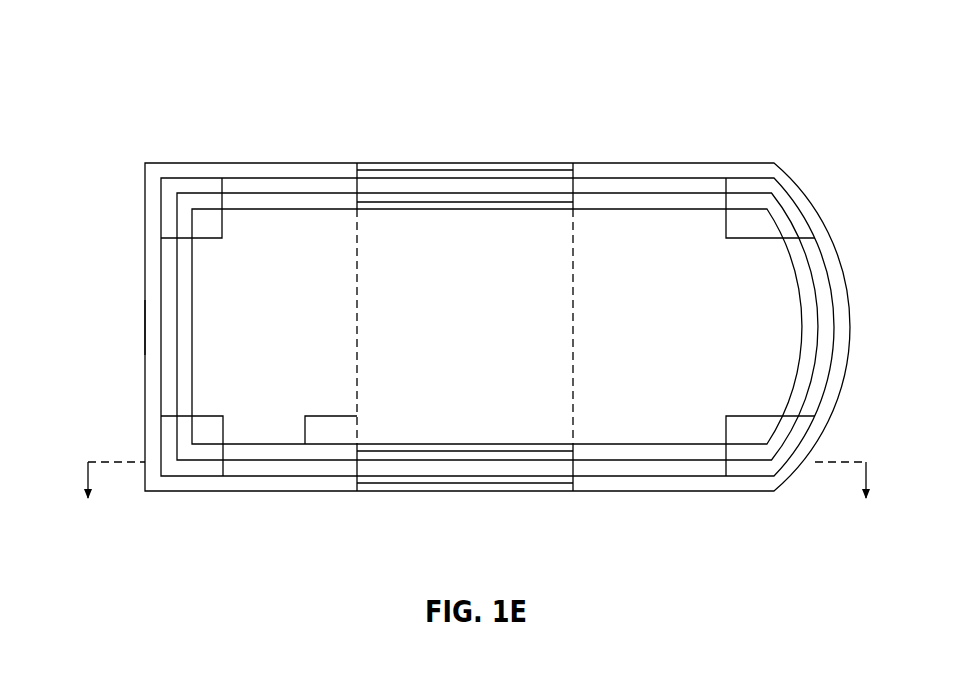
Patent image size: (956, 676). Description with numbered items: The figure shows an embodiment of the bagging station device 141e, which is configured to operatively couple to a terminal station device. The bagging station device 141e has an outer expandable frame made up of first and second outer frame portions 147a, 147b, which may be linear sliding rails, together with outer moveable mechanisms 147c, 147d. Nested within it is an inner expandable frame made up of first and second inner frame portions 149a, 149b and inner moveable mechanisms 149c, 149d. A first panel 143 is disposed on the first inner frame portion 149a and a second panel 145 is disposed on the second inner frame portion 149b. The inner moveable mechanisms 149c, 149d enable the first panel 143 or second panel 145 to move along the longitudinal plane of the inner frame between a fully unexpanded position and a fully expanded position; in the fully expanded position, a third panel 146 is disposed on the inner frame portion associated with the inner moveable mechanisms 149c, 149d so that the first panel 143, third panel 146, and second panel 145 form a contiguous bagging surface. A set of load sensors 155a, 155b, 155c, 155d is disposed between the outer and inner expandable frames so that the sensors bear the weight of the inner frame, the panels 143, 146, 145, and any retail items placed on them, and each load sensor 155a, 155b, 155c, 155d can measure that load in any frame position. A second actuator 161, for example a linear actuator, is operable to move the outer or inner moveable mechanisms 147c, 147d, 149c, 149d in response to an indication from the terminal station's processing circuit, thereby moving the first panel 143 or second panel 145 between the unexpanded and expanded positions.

The bagging station device 141e is at (140, 53).
The first panel 143 is at (287, 346).
The second panel 145 is at (707, 346).
The third panel 146 is at (487, 346).
The first outer frame portion 147a is at (260, 491).
The second outer frame portion 147b is at (743, 492).
The outer moveable mechanism 147c is at (465, 492).
The outer moveable mechanism 147d is at (533, 163).
The first inner frame portion 149a is at (275, 168).
The second inner frame portion 149b is at (653, 190).
The inner moveable mechanism 149c is at (482, 442).
The inner moveable mechanism 149d is at (474, 202).
The load sensor 155a is at (182, 170).
The load sensor 155b is at (165, 436).
The load sensor 155c is at (760, 183).
The load sensor 155d is at (780, 462).
The second actuator 161 is at (332, 427).